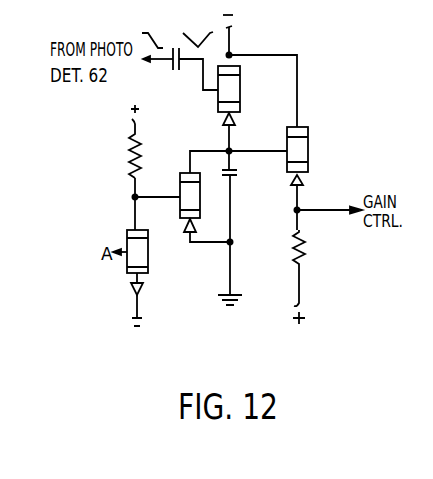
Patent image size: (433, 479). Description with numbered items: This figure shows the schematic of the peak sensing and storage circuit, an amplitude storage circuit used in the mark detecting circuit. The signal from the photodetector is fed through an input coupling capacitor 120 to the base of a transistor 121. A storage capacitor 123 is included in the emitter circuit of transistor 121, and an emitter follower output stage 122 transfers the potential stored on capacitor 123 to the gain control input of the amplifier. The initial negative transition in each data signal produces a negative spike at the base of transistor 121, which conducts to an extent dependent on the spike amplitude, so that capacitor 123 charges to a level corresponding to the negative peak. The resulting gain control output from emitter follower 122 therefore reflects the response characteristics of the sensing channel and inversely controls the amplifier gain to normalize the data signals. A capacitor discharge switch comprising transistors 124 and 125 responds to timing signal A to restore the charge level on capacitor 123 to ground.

The input coupling capacitor 120 is at (173, 72).
The transistor 121 is at (240, 92).
The emitter follower output stage 122 is at (304, 129).
The storage capacitor 123 is at (236, 177).
The transistor 124 is at (181, 185).
The transistor 125 is at (128, 230).